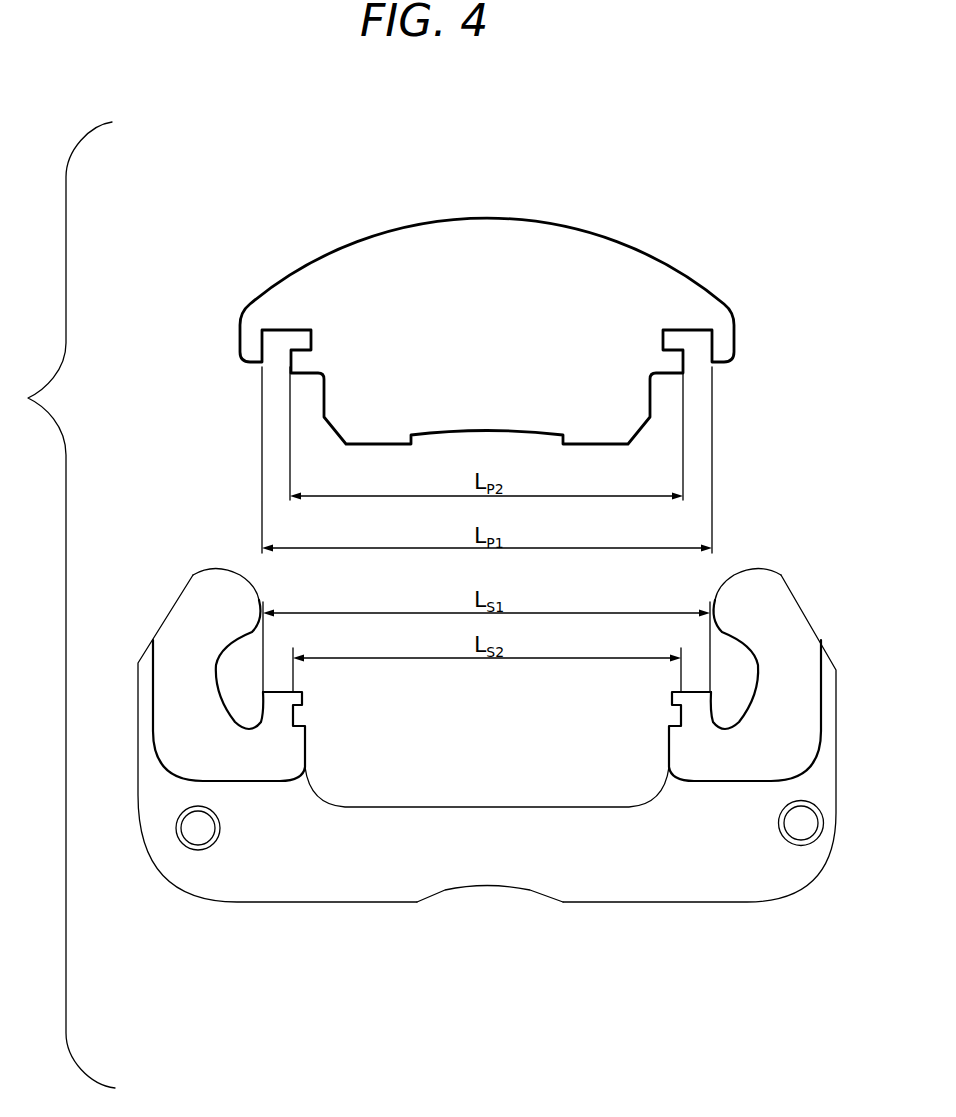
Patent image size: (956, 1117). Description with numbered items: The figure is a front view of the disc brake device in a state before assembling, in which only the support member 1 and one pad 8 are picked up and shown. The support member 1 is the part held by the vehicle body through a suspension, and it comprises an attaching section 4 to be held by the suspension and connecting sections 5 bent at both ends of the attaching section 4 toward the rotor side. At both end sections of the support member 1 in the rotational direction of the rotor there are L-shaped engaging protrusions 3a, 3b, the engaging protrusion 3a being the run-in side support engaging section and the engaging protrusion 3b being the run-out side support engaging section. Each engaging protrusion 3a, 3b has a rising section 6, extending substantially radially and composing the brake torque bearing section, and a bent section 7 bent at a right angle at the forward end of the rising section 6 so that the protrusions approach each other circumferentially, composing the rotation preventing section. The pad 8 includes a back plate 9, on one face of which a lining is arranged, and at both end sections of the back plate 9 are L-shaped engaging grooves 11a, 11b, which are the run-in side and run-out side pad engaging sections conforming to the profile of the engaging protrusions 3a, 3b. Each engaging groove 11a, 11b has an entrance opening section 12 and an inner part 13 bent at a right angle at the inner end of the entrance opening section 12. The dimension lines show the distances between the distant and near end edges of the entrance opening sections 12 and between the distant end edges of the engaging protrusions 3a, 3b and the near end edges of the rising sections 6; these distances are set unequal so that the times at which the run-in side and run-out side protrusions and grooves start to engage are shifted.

The support member 1 is at (600, 880).
The engaging protrusion 3a is at (697, 703).
The engaging protrusion 3b is at (273, 708).
The attaching section 4 is at (397, 883).
The connecting section 5 is at (197, 578).
The rising section 6 is at (280, 718).
The bent section 7 is at (303, 693).
The pad 8 is at (683, 278).
The back plate 9 is at (482, 230).
The engaging groove 11a is at (714, 344).
The engaging groove 11b is at (260, 339).
The entrance opening section 12 is at (290, 365).
The inner part 13 is at (308, 335).